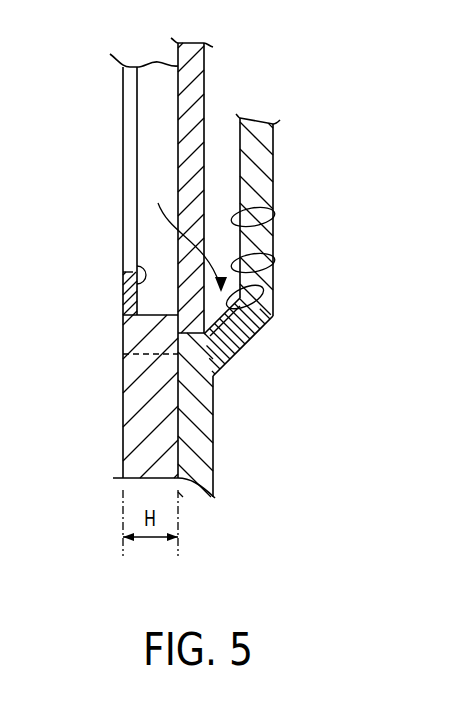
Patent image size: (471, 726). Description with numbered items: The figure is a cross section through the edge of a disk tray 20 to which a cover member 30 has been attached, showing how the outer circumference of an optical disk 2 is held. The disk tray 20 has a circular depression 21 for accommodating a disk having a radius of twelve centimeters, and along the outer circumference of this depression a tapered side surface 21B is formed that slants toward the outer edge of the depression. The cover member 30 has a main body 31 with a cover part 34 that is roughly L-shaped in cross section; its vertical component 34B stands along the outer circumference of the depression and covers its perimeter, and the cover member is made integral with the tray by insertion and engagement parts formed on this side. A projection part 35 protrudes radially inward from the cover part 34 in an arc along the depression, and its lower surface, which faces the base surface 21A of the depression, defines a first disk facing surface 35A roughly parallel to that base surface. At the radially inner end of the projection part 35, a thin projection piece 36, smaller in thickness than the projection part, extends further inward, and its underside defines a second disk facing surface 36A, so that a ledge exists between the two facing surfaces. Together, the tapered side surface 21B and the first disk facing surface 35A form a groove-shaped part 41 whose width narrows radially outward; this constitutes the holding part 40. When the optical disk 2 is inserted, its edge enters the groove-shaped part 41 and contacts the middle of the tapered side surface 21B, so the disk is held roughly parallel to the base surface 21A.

The optical disk 2 is at (195, 79).
The disk tray 20 is at (255, 170).
The circular depression 21 is at (314, 278).
The base surface of depression 21A is at (275, 214).
The tapered side surface 21B is at (243, 330).
The cover member 30 is at (130, 106).
The main body of cover member 31 is at (145, 386).
The cover part 34 is at (136, 426).
The vertical component 34B is at (146, 466).
The projection part 35 is at (138, 331).
The first disk facing surface 35A is at (214, 364).
The projection piece 36 is at (128, 292).
The second disk facing surface 36A is at (137, 266).
The holding part 40 is at (188, 235).
The groove-shaped part 41 is at (262, 299).